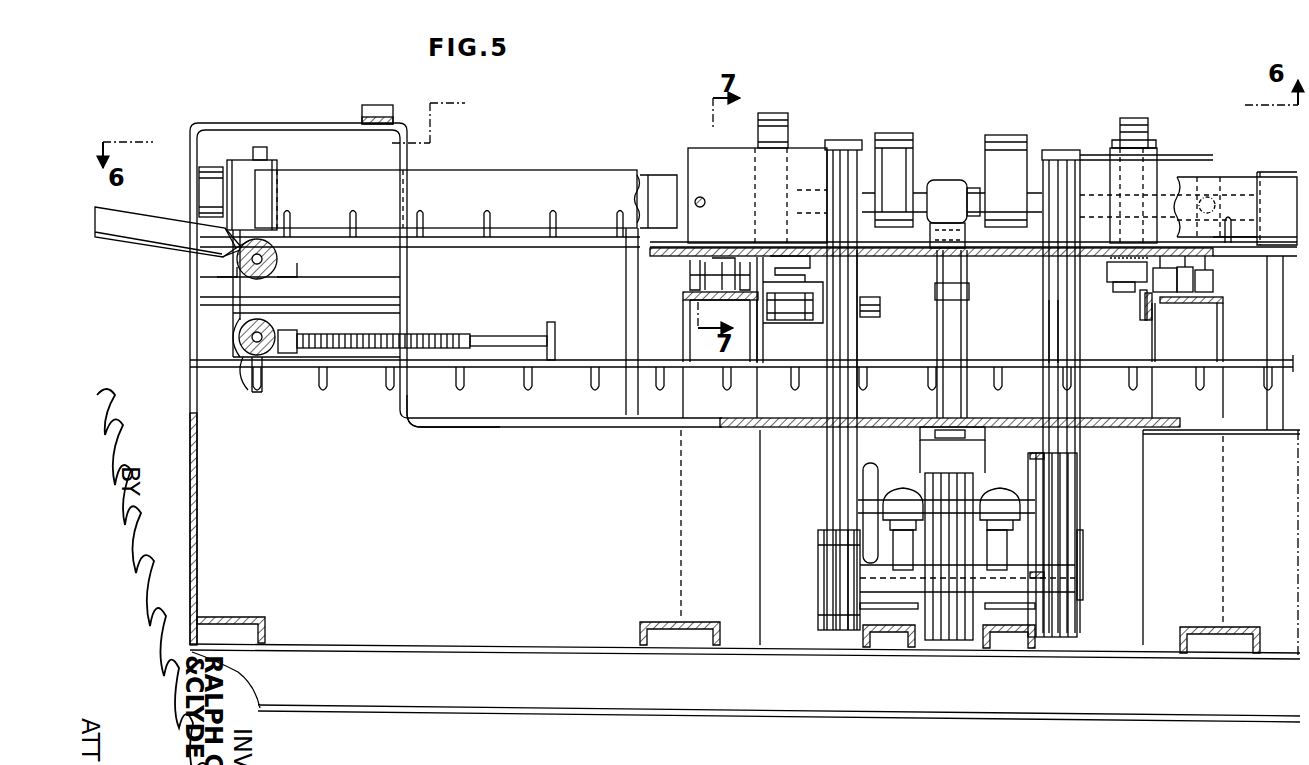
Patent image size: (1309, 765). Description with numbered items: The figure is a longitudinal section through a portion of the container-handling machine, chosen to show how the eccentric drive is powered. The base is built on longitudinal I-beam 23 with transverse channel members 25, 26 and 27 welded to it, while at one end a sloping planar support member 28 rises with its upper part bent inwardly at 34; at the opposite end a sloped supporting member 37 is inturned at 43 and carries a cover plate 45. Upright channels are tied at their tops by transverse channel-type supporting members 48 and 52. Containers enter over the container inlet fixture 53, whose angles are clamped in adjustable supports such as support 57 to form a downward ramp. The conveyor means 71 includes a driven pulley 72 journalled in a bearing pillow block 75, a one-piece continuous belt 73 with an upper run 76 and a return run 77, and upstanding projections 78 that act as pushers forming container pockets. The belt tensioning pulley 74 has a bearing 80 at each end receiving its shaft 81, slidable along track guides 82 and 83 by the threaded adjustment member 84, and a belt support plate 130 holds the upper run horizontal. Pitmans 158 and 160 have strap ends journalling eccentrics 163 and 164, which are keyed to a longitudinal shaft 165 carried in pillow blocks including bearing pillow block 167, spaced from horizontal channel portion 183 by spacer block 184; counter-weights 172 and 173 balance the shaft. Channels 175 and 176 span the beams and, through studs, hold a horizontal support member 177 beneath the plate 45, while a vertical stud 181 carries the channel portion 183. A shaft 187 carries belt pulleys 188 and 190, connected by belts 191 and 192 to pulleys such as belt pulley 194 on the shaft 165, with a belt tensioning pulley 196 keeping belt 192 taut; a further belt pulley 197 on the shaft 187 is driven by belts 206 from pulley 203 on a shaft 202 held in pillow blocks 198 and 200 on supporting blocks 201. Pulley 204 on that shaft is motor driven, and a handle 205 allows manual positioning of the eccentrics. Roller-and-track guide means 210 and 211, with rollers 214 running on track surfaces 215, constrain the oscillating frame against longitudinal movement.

The I-beam 23 is at (735, 692).
The channel member 25 is at (1235, 626).
The channel member 26 is at (655, 622).
The channel member 27 is at (270, 618).
The support member 28 is at (1202, 527).
The inwardly bent portion 34 is at (1187, 432).
The sloped supporting member 37 is at (190, 428).
The inturned portion 43 is at (455, 430).
The cover plate 45 is at (770, 432).
The channel-type supporting member 48 is at (1225, 302).
The channel-type supporting member 52 is at (688, 298).
The container inlet fixture 53 is at (202, 213).
The support 57 is at (152, 228).
The conveyor means 71 is at (180, 275).
The driven pulley 72 is at (272, 247).
The continuous belt 73 is at (232, 297).
The belt tensioning pulley 74 is at (237, 342).
The bearing pillow block 75 is at (288, 268).
The upper run 76 is at (518, 245).
The return run 77 is at (563, 360).
The projections 78 is at (552, 232).
The bearing 80 is at (275, 325).
The shaft 81 is at (262, 362).
The track guide 82 is at (388, 312).
The track guide 83 is at (233, 368).
The threaded adjustment member 84 is at (428, 335).
The belt support plate 130 is at (548, 256).
The pitman 158 is at (762, 113).
The pitman 160 is at (1138, 120).
The eccentric 163 is at (792, 135).
The eccentric 164 is at (1150, 125).
The shaft 165 is at (972, 190).
The bearing pillow block 167 is at (945, 180).
The counter-weight 172 is at (1002, 140).
The counter-weight 173 is at (888, 133).
The channel 175 is at (1040, 640).
The channel 176 is at (880, 648).
The horizontal support member 177 is at (995, 420).
The vertical stud 181 is at (968, 320).
The horizontal channel portion 183 is at (968, 300).
The spacer block 184 is at (850, 150).
The shaft 187 is at (818, 570).
The belt pulley 188 is at (1078, 605).
The belt pulley 190 is at (818, 588).
The belt 191 is at (1056, 342).
The belt 192 is at (848, 340).
The belt pulley 194 is at (1060, 150).
The belt tensioning pulley 196 is at (868, 297).
The belt pulley 197 is at (968, 640).
The pillow block 198 is at (888, 508).
The pillow block 200 is at (995, 497).
The supporting block 201 is at (868, 606).
The shaft 202 is at (920, 505).
The pulley 203 is at (980, 495).
The pulley 204 is at (1045, 487).
The handle 205 is at (872, 468).
The belts 206 is at (917, 640).
The guide means 210 is at (686, 265).
The guide means 211 is at (1140, 300).
The roller 214 is at (790, 300).
The track surface 215 is at (780, 300).